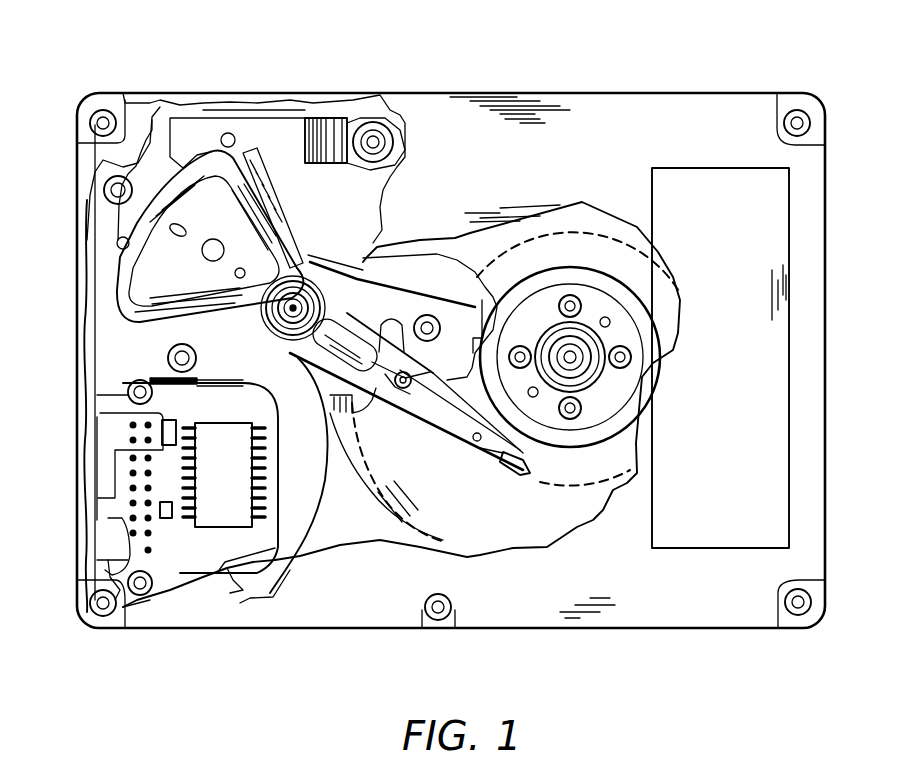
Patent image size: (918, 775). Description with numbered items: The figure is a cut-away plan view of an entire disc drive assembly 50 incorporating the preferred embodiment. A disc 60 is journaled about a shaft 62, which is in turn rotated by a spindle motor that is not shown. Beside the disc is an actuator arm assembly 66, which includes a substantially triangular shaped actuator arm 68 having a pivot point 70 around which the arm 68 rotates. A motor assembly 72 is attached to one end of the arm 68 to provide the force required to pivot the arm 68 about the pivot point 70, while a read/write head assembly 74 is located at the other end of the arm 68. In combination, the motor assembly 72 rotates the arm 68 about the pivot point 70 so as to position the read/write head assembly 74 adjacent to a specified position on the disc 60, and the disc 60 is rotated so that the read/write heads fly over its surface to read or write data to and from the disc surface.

The disc drive assembly 50 is at (638, 77).
The disc 60 is at (486, 517).
The shaft 62 is at (580, 362).
The actuator arm assembly 66 is at (345, 352).
The actuator arm 68 is at (428, 375).
The pivot point 70 is at (168, 358).
The motor assembly 72 is at (130, 296).
The read/write head assembly 74 is at (522, 473).